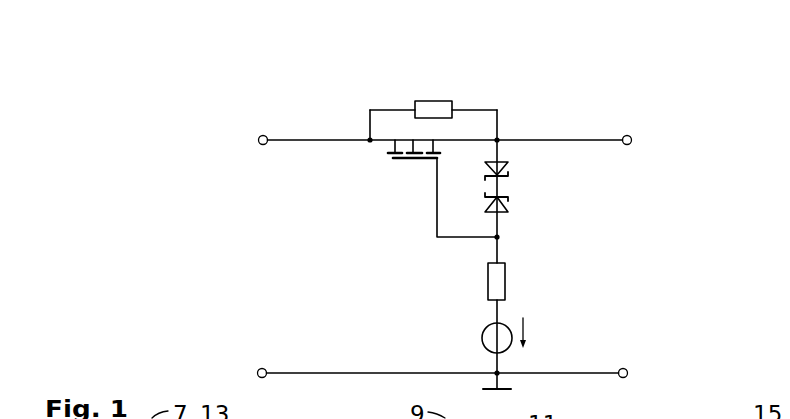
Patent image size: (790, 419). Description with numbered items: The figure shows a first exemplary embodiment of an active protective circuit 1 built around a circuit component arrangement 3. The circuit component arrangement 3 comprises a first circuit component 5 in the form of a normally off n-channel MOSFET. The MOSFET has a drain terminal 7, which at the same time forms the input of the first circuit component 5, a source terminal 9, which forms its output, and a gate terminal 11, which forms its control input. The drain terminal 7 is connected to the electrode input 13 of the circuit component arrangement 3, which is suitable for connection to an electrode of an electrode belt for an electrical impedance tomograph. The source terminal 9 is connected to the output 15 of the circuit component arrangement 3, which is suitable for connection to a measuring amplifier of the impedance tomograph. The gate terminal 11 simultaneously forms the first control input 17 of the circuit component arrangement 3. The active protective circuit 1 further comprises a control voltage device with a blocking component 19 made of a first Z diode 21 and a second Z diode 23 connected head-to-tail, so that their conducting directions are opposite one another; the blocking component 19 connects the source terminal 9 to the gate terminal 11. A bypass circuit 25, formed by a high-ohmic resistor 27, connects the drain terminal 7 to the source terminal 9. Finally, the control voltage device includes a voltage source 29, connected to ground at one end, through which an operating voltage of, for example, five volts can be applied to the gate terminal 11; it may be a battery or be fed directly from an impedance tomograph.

The active protective circuit 1 is at (232, 102).
The circuit component arrangement 3 is at (345, 223).
The first circuit component 5 is at (405, 178).
The drain terminal 7 is at (370, 140).
The source terminal 9 is at (497, 140).
The gate terminal 11 is at (496, 238).
The electrode input 13 is at (258, 140).
The output of the circuit component arrangement 15 is at (628, 136).
The first control input 17 is at (500, 239).
The blocking component 19 is at (549, 189).
The first Z diode 21 is at (509, 173).
The second Z diode 23 is at (509, 200).
The bypass circuit 25 is at (383, 77).
The high-ohmic resistor 27 is at (437, 108).
The voltage source 29 is at (480, 338).